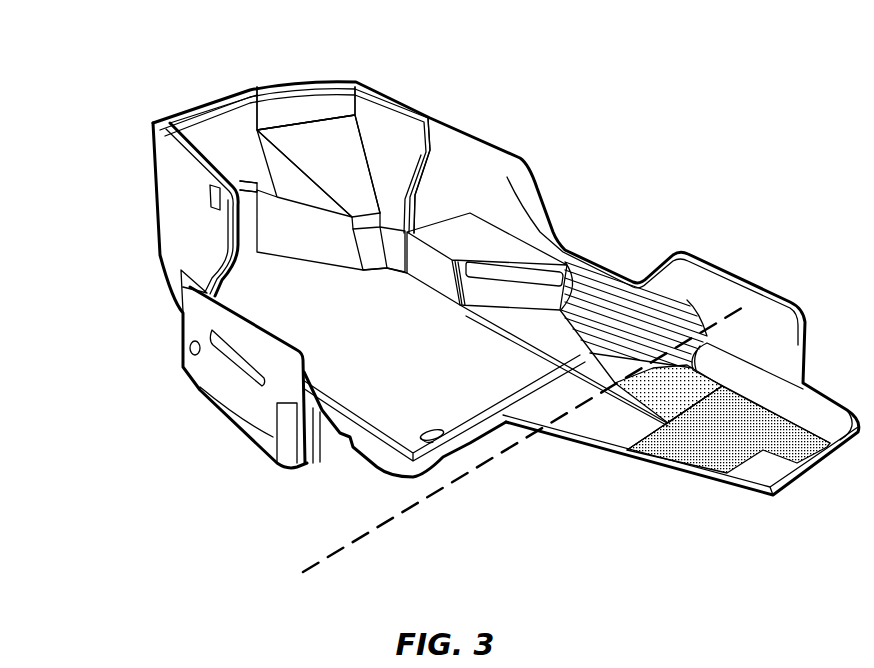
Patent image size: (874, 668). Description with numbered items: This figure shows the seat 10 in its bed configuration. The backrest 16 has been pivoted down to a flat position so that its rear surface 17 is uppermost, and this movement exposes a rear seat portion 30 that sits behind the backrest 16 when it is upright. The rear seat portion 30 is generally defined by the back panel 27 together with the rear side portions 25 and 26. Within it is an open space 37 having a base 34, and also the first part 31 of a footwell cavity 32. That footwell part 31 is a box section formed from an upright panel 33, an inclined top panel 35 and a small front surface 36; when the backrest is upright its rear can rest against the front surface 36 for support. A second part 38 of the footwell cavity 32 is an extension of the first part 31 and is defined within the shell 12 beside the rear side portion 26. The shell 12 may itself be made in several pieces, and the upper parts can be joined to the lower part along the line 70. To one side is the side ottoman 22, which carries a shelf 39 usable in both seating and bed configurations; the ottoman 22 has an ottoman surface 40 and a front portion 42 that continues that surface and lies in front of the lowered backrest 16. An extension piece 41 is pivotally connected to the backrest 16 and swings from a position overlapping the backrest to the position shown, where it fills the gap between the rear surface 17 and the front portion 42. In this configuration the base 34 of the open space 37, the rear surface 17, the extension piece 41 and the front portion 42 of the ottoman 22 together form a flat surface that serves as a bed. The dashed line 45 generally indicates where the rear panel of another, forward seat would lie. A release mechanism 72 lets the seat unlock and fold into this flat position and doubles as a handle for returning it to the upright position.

The seat 10 is at (130, 145).
The shell 12 is at (528, 163).
The backrest 16 is at (368, 395).
The rear surface 17 is at (490, 357).
The side ottoman 22 is at (702, 286).
The rear side portion 25 is at (168, 200).
The rear side portion 26 is at (360, 105).
The back panel 27 is at (308, 107).
The rear seat portion 30 is at (216, 118).
The first part of footwell cavity 31 is at (332, 148).
The footwell cavity 32 is at (430, 183).
The upright panel 33 is at (303, 195).
The base 34 is at (247, 285).
The inclined top panel 35 is at (350, 195).
The small front surface 36 is at (367, 218).
The open space 37 is at (254, 226).
The second part of footwell 38 is at (493, 198).
The shelf 39 is at (492, 240).
The ottoman surface 40 is at (690, 327).
The extension piece 41 is at (597, 433).
The front portion 42 is at (690, 453).
The line 45 is at (392, 522).
The line 70 is at (219, 130).
The release mechanism 72 is at (428, 433).